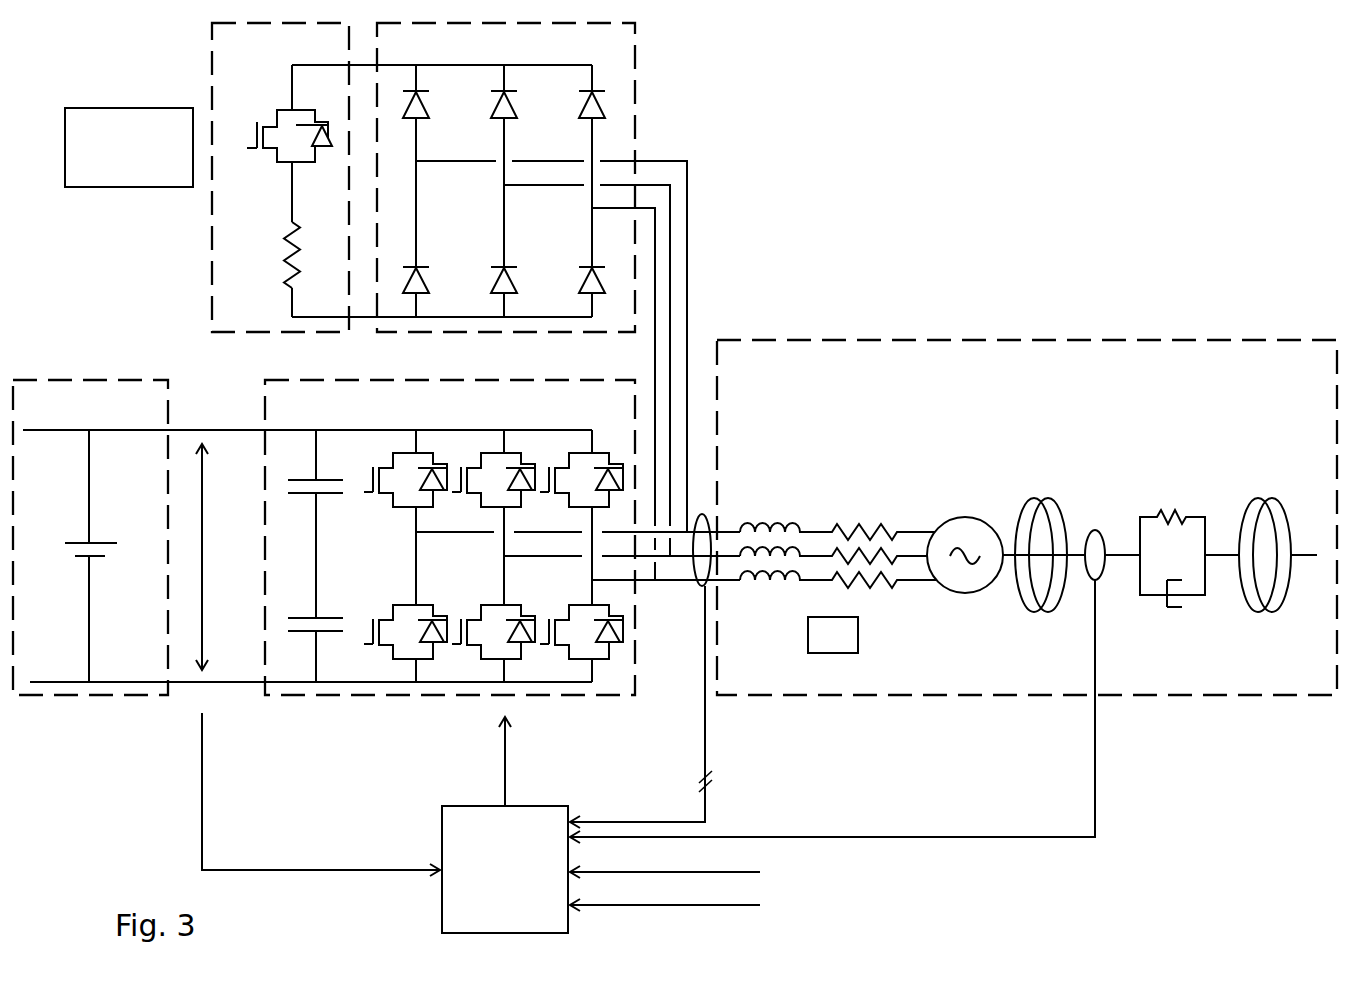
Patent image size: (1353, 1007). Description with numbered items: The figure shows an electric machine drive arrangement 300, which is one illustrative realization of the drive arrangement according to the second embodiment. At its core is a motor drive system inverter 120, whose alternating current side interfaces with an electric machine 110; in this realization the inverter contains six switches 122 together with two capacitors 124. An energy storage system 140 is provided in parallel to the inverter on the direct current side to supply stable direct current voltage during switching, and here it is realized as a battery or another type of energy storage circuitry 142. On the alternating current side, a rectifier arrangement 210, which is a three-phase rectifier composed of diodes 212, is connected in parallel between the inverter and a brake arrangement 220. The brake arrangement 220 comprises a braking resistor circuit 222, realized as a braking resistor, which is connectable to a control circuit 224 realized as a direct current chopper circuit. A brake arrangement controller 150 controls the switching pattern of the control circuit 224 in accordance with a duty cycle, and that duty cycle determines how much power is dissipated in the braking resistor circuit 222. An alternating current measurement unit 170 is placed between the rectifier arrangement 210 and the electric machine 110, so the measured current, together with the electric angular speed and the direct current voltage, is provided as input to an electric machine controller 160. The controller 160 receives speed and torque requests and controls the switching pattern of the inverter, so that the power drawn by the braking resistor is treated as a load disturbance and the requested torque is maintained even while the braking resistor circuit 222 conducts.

The electric machine 110 is at (1053, 376).
The motor drive system inverter 120 is at (502, 537).
The switches 122 is at (522, 458).
The capacitors 124 is at (360, 543).
The energy storage system 140 is at (302, 537).
The battery or other energy storage circuitry 142 is at (75, 548).
The brake arrangement controller 150 is at (107, 159).
The electric machine controller 160 is at (528, 880).
The alternating current measurement unit 170 is at (700, 590).
The rectifier arrangement 210 is at (532, 301).
The diodes 212 is at (427, 280).
The brake arrangement 220 is at (402, 177).
The braking resistor circuit 222 is at (291, 262).
The control circuit 224 is at (277, 160).
The electric machine drive arrangement 300 is at (970, 97).